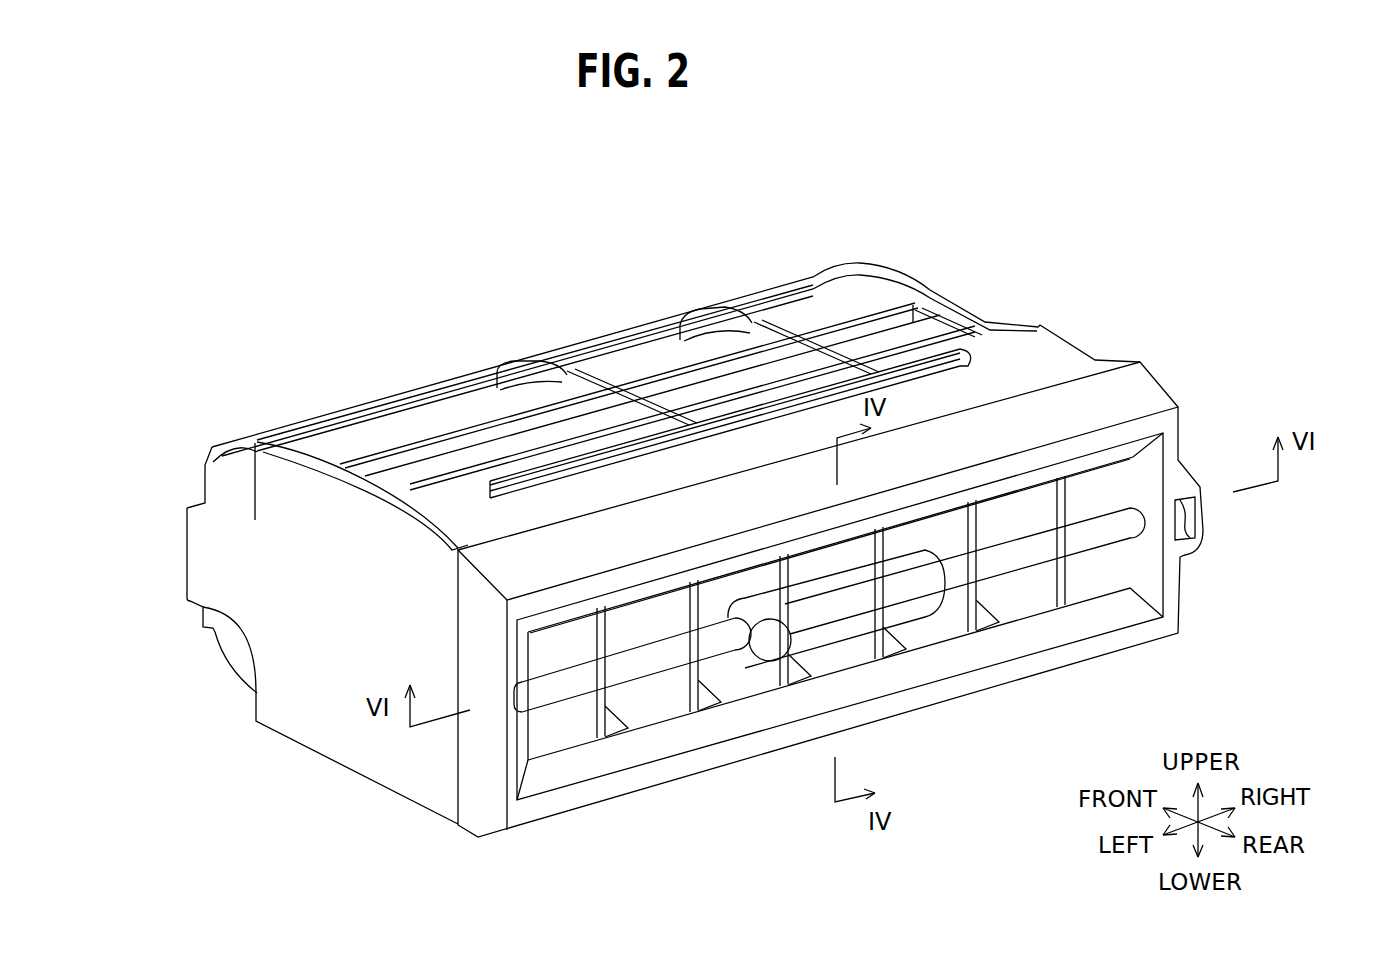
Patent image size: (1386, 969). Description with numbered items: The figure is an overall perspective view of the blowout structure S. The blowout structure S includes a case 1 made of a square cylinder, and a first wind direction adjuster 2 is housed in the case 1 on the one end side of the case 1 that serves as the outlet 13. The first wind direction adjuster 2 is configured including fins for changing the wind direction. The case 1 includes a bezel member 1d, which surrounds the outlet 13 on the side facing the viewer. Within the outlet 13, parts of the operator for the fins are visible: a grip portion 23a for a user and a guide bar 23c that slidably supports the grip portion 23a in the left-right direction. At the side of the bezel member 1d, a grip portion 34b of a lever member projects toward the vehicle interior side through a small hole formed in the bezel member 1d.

The case 1 is at (720, 402).
The bezel member 1d is at (1133, 390).
The first wind direction adjuster 2 is at (658, 710).
The outlet 13 is at (1003, 600).
The grip portion 23a is at (750, 661).
The guide bar 23c is at (560, 687).
The grip portion 34b is at (1207, 527).
The blowout structure S is at (1082, 246).